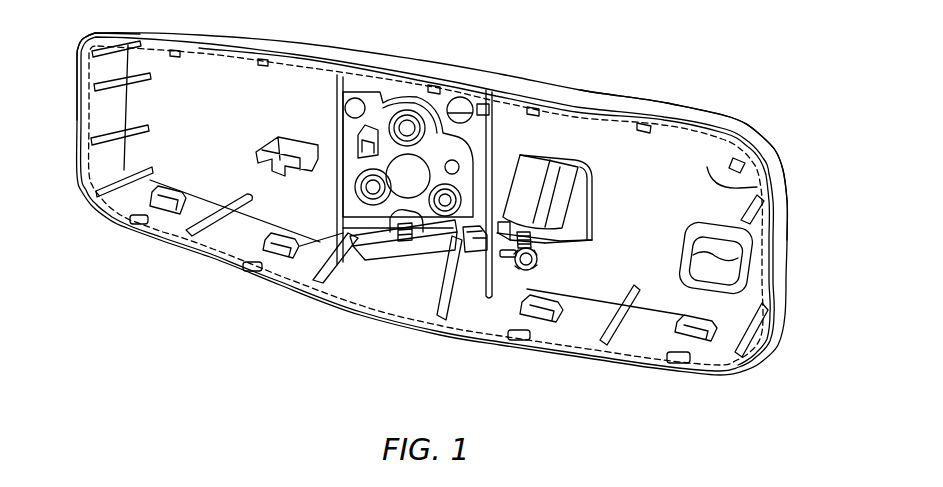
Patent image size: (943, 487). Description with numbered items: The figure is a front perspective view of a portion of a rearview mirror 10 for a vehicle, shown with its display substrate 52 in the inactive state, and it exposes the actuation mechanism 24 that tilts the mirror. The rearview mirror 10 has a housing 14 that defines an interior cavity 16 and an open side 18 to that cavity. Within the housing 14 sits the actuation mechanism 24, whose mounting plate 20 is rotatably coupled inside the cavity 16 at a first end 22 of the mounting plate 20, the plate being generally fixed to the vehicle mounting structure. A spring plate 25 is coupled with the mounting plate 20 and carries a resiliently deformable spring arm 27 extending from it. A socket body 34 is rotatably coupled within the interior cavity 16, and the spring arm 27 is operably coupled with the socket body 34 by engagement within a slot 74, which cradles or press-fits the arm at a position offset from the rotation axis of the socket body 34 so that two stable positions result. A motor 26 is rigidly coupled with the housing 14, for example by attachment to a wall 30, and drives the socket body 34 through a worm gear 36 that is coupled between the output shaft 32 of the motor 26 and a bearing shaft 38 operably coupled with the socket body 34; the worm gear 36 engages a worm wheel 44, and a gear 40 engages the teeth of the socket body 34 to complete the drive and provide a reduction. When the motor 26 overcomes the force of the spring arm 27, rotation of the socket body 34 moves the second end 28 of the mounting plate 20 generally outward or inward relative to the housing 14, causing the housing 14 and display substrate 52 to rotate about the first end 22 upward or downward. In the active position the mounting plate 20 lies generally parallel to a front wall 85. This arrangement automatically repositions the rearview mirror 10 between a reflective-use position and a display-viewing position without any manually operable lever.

The rearview mirror 10 is at (628, 50).
The housing 14 is at (438, 74).
The interior cavity 16 is at (597, 287).
The open side 18 is at (680, 123).
The mounting plate 20 is at (480, 128).
The first end 22 is at (483, 108).
The actuation mechanism 24 is at (552, 246).
The spring plate 25 is at (388, 138).
The motor 26 is at (562, 192).
The spring arm 27 is at (300, 290).
The second end 28 is at (478, 237).
The wall 30 is at (530, 143).
The output shaft 32 is at (557, 230).
The socket body 34 is at (362, 230).
The worm gear 36 is at (514, 268).
The bearing shaft 38 is at (437, 260).
The gear 40 is at (397, 233).
The worm wheel 44 is at (538, 263).
The display substrate 52 is at (80, 70).
The slot 74 is at (476, 243).
The front wall 85 is at (757, 187).